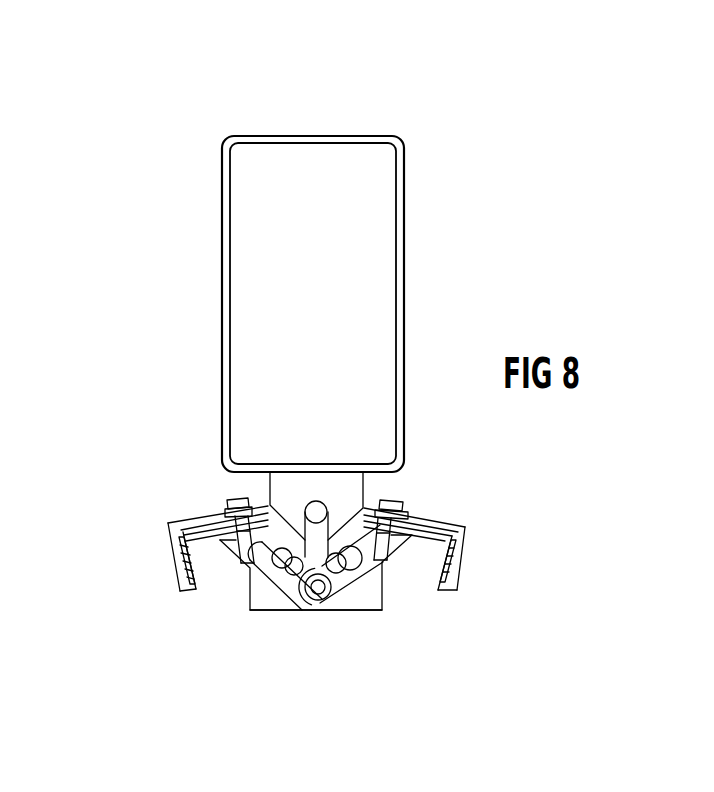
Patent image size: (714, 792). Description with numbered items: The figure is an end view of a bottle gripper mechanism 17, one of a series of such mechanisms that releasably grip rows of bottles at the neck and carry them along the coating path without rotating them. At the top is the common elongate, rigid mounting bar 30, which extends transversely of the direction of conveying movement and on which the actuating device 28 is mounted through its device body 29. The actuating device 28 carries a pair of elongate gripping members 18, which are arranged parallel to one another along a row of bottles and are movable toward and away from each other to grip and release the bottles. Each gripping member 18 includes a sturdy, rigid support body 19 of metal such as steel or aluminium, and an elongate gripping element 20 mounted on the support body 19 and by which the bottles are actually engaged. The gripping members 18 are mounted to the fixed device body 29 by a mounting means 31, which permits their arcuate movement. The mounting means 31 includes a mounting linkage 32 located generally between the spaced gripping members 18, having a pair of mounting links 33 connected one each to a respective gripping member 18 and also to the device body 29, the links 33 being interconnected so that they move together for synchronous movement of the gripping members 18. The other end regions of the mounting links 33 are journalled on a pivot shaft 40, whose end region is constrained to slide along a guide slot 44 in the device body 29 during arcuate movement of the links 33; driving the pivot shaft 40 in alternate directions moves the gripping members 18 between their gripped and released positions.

The gripper mechanism 17 is at (134, 609).
The gripping member 18 is at (143, 547).
The support body 19 is at (168, 522).
The gripping element 20 is at (177, 573).
The actuating device 28 is at (510, 562).
The device body 29 is at (338, 482).
The mounting bar 30 is at (316, 186).
The mounting means 31 is at (398, 580).
The mounting linkage 32 is at (366, 586).
The mounting link 33 is at (272, 581).
The pivot shaft 40 is at (316, 604).
The guide slot 44 is at (300, 527).